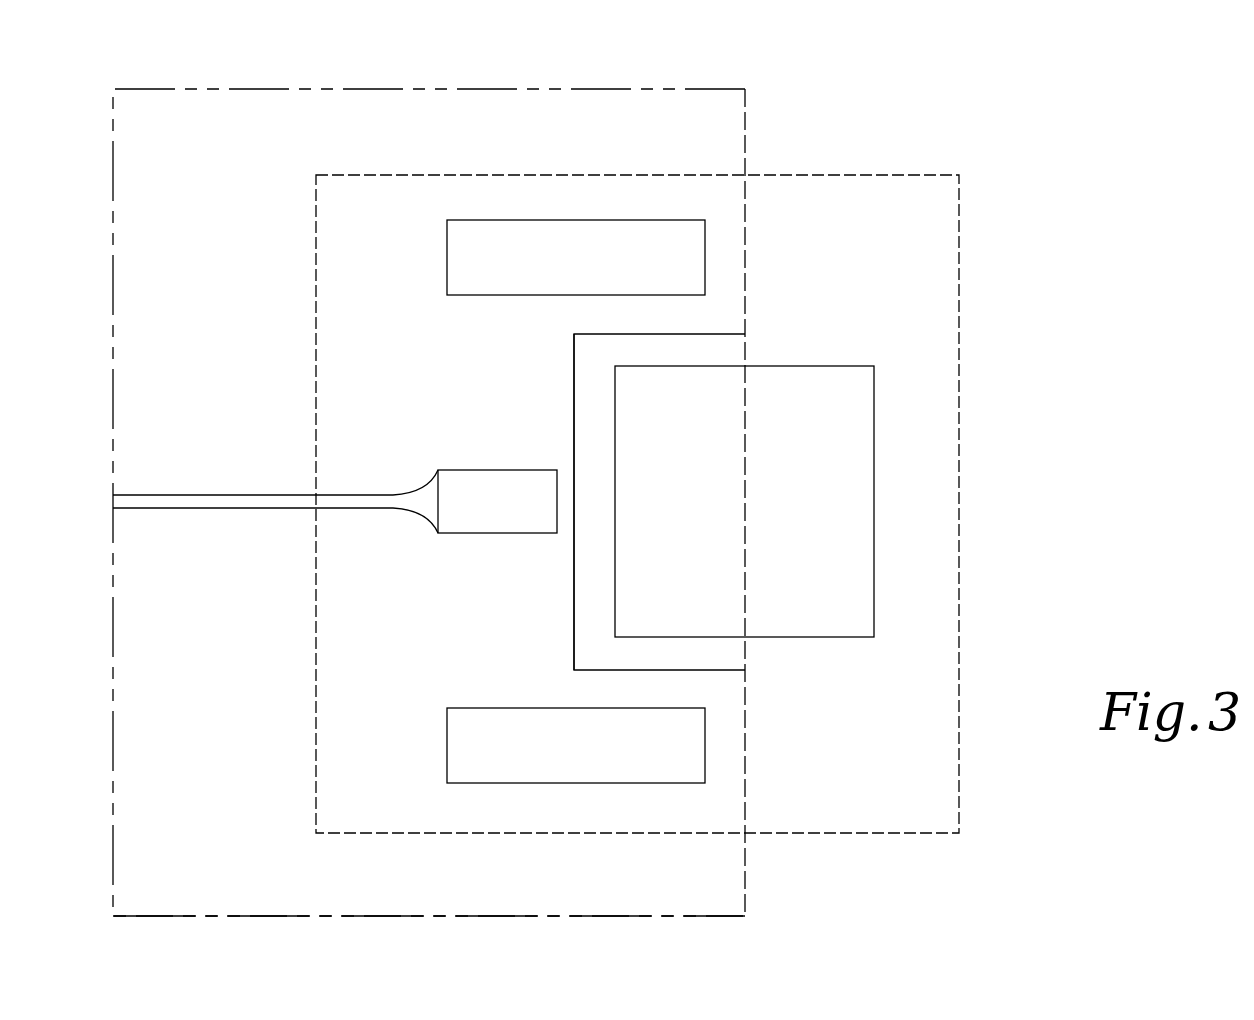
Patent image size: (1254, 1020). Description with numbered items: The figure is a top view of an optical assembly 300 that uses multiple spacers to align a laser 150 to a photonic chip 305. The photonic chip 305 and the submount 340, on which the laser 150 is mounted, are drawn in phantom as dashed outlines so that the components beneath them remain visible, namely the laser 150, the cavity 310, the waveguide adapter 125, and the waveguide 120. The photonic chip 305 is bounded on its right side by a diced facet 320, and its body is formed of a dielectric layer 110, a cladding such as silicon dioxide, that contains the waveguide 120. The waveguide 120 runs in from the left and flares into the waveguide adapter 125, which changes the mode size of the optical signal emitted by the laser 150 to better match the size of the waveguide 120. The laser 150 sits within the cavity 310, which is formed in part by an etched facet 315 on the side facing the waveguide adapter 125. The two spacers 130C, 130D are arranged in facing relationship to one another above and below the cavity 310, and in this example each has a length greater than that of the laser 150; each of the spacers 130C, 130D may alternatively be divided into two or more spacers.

The optical assembly 300 is at (622, 473).
The photonic chip 305 is at (652, 80).
The diced facet 320 is at (747, 128).
The dielectric layer 110 is at (718, 867).
The submount 340 is at (960, 293).
The spacer 130C is at (658, 220).
The spacer 130D is at (658, 783).
The cavity 310 is at (725, 657).
The etched facet 315 is at (574, 447).
The laser 150 is at (798, 366).
The waveguide adapter 125 is at (498, 468).
The waveguide 120 is at (253, 471).